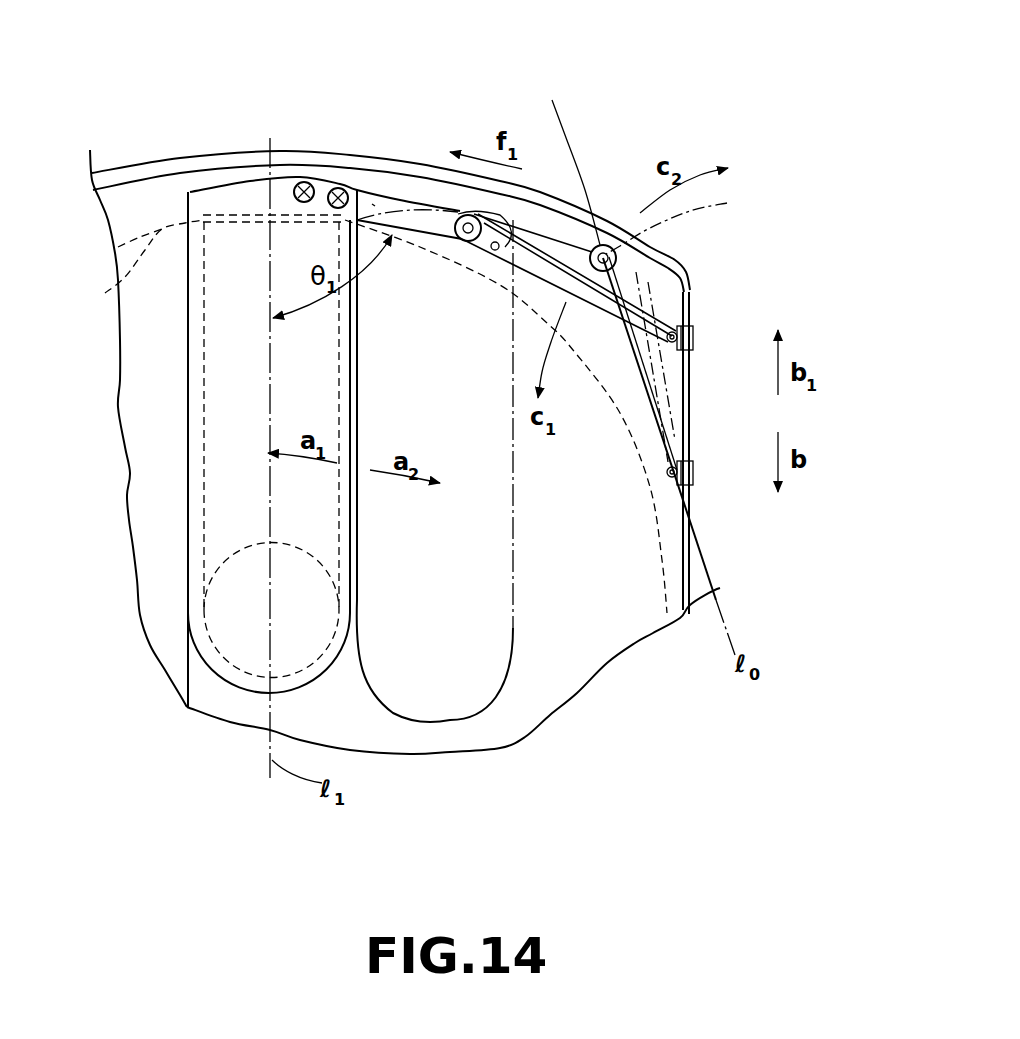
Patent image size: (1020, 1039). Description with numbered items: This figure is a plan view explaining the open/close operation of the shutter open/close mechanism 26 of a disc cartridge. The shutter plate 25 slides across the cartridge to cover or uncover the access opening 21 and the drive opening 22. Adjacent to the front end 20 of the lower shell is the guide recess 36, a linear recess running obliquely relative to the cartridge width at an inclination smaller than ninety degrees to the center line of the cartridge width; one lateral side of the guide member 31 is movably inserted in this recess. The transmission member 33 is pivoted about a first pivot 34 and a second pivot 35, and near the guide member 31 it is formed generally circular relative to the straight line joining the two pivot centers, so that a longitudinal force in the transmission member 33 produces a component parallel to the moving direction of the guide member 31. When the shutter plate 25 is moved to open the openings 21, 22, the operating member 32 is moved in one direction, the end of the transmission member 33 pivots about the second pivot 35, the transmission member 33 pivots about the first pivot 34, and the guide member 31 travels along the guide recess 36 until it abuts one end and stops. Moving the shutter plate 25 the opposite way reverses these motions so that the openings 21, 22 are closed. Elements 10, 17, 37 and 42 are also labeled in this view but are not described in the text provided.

The recessed portion 10 is at (245, 548).
The flange 17 is at (130, 273).
The front end 20 is at (167, 158).
The access opening 21 is at (207, 364).
The drive opening 22 is at (233, 648).
The shutter plate 25 is at (188, 547).
The shutter open/close mechanism 26 is at (542, 165).
The guide member 31 is at (382, 202).
The operating member 32 is at (699, 338).
The transmission member 33 is at (563, 240).
The first pivot 34 is at (469, 215).
The second pivot 35 is at (680, 335).
The guide recess 36 is at (494, 250).
The side rail 37 is at (690, 413).
The screw 42 is at (304, 182).